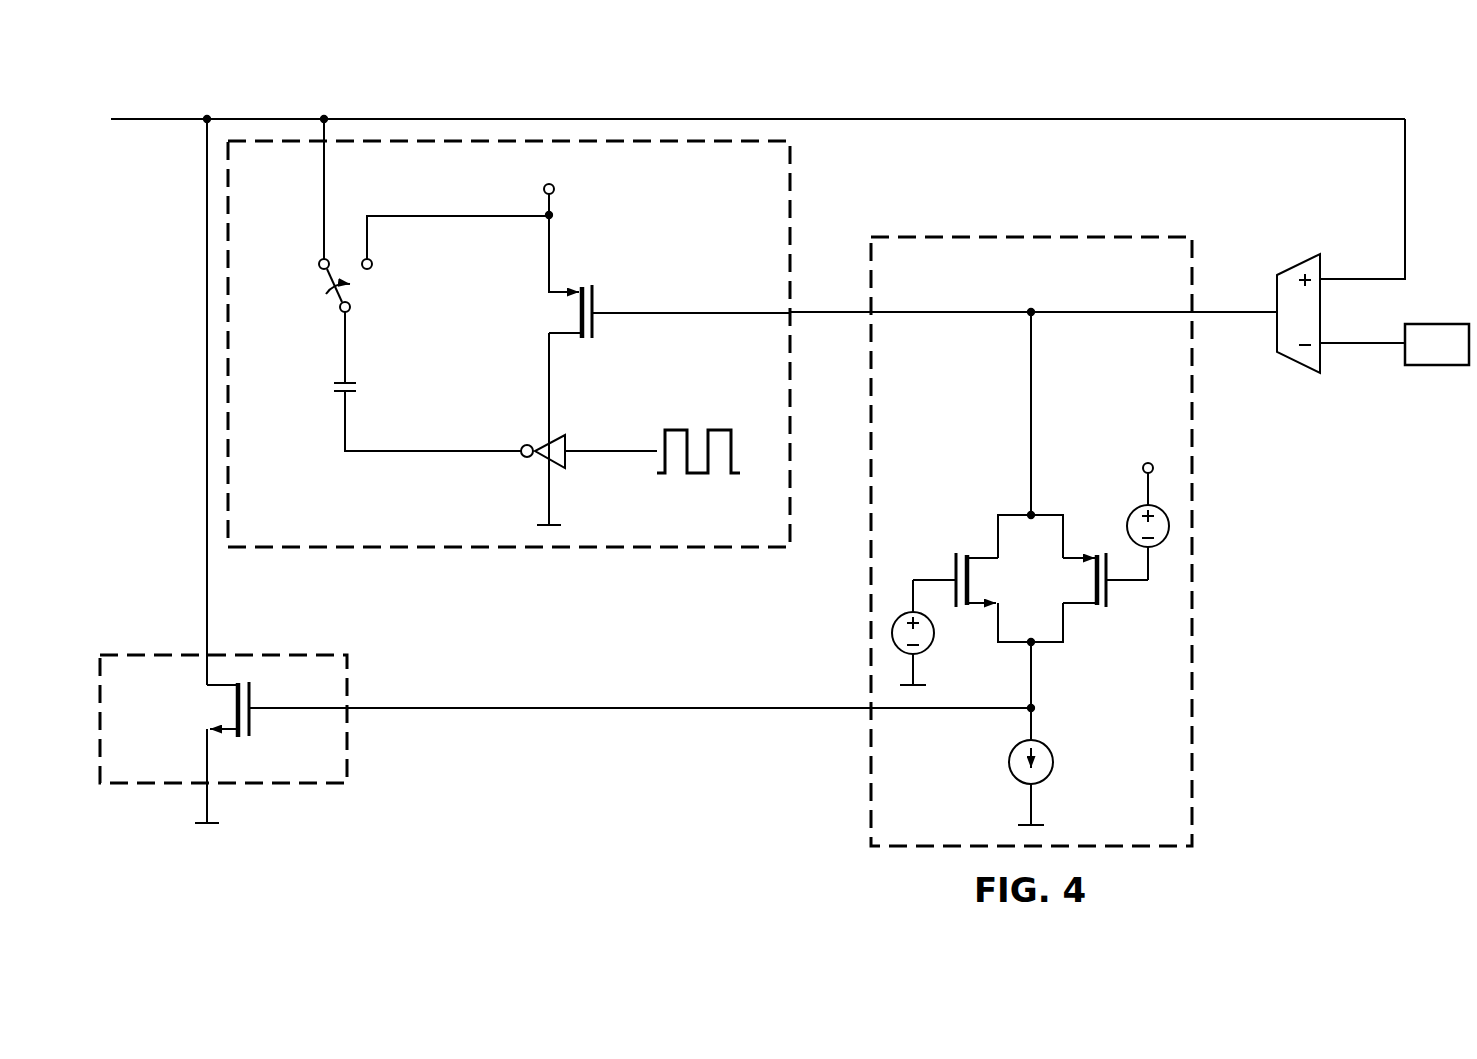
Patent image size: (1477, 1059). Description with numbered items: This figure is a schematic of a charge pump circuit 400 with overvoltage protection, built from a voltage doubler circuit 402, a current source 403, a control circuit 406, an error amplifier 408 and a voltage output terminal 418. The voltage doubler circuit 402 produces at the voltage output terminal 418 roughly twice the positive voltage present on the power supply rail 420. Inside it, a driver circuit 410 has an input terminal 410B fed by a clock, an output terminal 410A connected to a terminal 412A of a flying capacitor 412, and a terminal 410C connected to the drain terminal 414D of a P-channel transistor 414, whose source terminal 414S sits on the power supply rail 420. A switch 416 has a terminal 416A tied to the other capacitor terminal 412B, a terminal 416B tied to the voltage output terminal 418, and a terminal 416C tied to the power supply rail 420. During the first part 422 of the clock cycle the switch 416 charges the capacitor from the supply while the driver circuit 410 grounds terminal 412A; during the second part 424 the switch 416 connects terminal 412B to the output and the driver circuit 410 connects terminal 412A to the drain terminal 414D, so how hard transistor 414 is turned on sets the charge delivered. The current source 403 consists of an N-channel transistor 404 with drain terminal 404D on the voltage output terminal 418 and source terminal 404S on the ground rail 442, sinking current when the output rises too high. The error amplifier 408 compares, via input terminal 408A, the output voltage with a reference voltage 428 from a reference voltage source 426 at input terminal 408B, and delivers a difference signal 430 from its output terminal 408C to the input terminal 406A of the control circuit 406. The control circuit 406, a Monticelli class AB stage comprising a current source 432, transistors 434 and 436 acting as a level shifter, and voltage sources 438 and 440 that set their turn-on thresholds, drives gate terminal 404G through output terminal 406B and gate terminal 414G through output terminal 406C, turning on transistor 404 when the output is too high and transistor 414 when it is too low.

The charge pump circuit 400 is at (1312, 72).
The voltage doubler circuit 402 is at (455, 548).
The current source 403 is at (268, 788).
The transistor 404 is at (227, 743).
The drain terminal 404D is at (204, 681).
The source terminal 404S is at (204, 736).
The gate terminal 404G is at (266, 712).
The control circuit 406 is at (1200, 636).
The input terminal 406A is at (1204, 312).
The output terminal 406B is at (860, 710).
The output terminal 406C is at (858, 311).
The error amplifier 408 is at (1302, 262).
The input terminal 408A is at (1330, 278).
The input terminal 408B is at (1325, 345).
The output terminal 408C is at (1265, 314).
The driver circuit 410 is at (558, 429).
The output terminal 410A is at (524, 458).
The input terminal 410B is at (563, 438).
The terminal 410C is at (547, 430).
The flying capacitor 412 is at (346, 387).
The terminal 412A is at (345, 395).
The terminal 412B is at (345, 372).
The transistor 414 is at (624, 294).
The source terminal 414S is at (547, 283).
The drain terminal 414D is at (547, 344).
The gate terminal 414G is at (600, 318).
The switch 416 is at (391, 228).
The terminal 416A is at (350, 318).
The terminal 416B is at (322, 258).
The terminal 416C is at (368, 258).
The voltage output terminal 418 is at (188, 118).
The power supply rail 420 is at (553, 202).
The first part of the clock cycle 422 is at (673, 428).
The second part of the clock cycle 424 is at (699, 476).
The reference voltage source 426 is at (1438, 323).
The reference voltage 428 is at (1360, 342).
The difference signal 430 is at (1118, 311).
The current source 432 is at (1055, 760).
The transistor 434 is at (953, 568).
The transistor 436 is at (1110, 590).
The voltage source 438 is at (929, 650).
The voltage source 440 is at (1128, 512).
The ground rail 442 is at (205, 810).